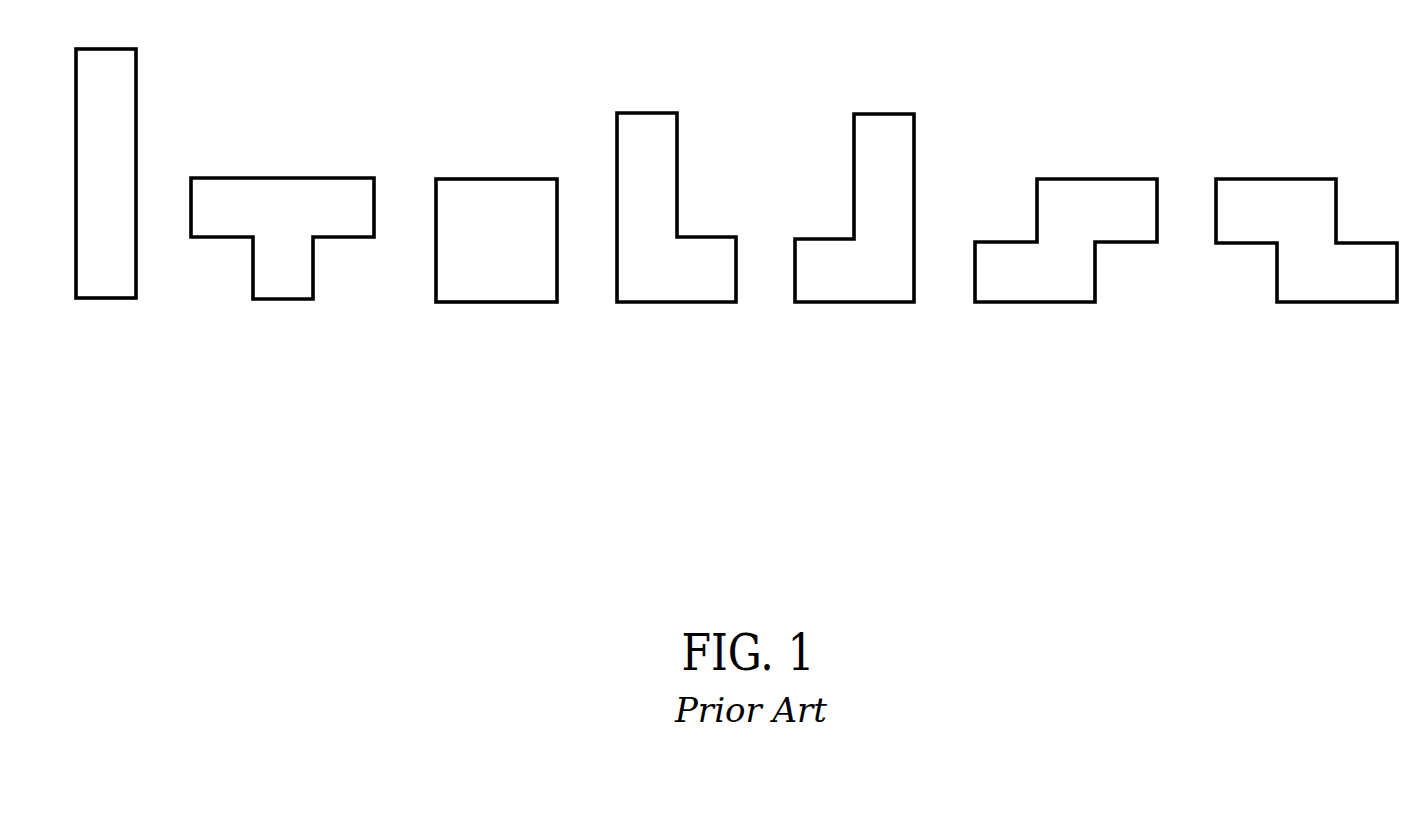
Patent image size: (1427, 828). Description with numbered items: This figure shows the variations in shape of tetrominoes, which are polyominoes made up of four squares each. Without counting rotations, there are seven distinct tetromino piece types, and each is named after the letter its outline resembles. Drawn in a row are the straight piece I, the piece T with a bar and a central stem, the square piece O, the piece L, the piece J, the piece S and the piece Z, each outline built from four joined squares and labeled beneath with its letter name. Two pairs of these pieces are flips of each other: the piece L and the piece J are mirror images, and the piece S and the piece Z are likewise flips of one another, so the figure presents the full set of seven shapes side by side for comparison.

The I tetromino piece I is at (106, 243).
The T tetromino piece T is at (282, 307).
The O tetromino piece O is at (496, 308).
The L tetromino piece L is at (676, 275).
The J tetromino piece J is at (854, 272).
The S tetromino piece S is at (1066, 308).
The Z tetromino piece Z is at (1306, 308).